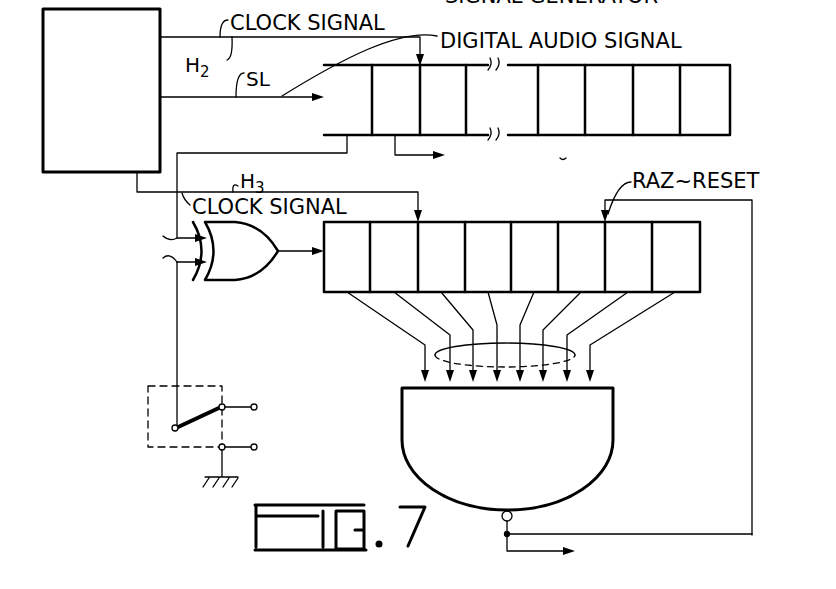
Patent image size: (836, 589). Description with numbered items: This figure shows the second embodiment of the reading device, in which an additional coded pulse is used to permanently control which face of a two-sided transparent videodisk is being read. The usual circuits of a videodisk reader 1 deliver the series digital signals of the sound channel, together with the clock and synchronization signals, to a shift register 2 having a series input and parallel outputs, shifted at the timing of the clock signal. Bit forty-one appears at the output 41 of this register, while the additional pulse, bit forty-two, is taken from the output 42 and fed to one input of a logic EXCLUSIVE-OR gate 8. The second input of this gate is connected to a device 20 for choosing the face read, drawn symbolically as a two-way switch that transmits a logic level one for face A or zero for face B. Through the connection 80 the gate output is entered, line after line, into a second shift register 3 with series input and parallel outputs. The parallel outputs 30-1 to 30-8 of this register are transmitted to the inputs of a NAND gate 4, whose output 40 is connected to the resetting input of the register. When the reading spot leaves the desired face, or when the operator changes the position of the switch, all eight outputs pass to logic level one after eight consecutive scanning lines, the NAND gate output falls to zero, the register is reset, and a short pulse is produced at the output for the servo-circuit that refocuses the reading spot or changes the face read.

The circuits of a videodisk reader 1 is at (90, 172).
The shift register 2 is at (552, 136).
The second shift register 3 is at (510, 222).
The NAND gate 4 is at (594, 434).
The EXCLUSIVE-OR gate 8 is at (243, 282).
The device for choosing the face read 20 is at (150, 412).
The first output of shift register 3 30-1 is at (530, 337).
The eighth output of shift register 3 30-8 is at (598, 352).
The output of NAND gate 40 is at (627, 534).
The output for bit 41 of shift register 2 41 is at (402, 176).
The bit 42 output 42 is at (228, 153).
The connection 80 is at (285, 253).